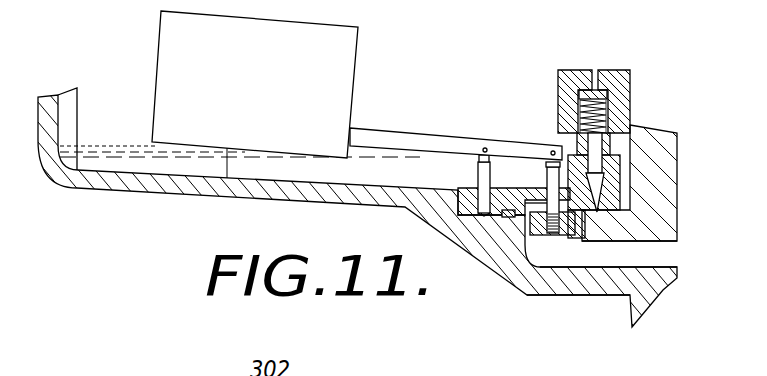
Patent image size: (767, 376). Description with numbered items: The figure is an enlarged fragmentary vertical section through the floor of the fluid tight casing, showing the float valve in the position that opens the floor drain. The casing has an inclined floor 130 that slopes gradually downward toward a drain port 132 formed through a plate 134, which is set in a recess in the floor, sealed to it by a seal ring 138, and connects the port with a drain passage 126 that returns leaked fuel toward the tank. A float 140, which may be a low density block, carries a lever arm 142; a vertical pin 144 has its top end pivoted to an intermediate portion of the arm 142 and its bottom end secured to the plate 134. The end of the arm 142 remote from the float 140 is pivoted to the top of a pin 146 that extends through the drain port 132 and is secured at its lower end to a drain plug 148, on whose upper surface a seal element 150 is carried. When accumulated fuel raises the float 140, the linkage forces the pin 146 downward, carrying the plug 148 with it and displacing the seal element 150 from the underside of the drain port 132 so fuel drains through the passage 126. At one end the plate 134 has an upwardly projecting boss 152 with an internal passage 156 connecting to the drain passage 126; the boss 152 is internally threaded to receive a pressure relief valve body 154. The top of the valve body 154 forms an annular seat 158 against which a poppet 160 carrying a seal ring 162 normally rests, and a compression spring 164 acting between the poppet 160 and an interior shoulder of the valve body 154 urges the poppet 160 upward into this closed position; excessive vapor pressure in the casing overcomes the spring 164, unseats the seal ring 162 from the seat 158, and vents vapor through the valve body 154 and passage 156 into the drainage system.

The drain passage 126 is at (630, 264).
The inclined floor 130 is at (160, 182).
The drain port 132 is at (537, 192).
The plate 134 is at (490, 213).
The seal ring 138 is at (603, 242).
The float 140 is at (340, 37).
The lever arm 142 is at (413, 137).
The vertical pin 144 is at (478, 171).
The pin 146 is at (547, 173).
The drain plug 148 is at (525, 212).
The seal element 150 is at (557, 217).
The boss 152 is at (600, 175).
The pressure relief valve body 154 is at (630, 97).
The internal passage 156 is at (600, 207).
The annular seat 158 is at (583, 70).
The poppet 160 is at (558, 100).
The seal ring 162 is at (558, 85).
The compression spring 164 is at (608, 108).